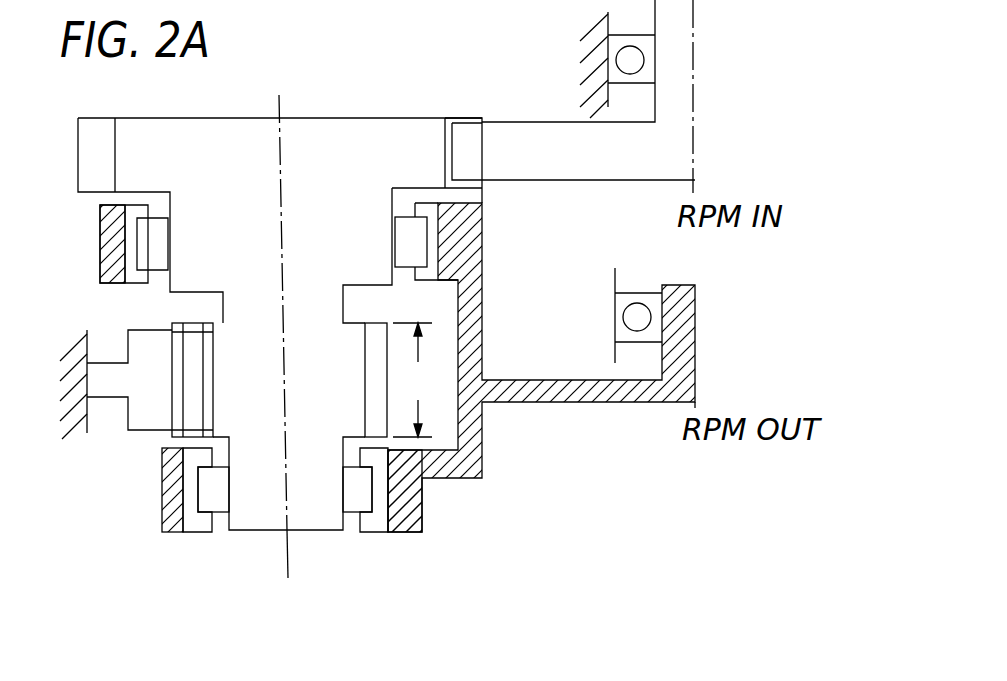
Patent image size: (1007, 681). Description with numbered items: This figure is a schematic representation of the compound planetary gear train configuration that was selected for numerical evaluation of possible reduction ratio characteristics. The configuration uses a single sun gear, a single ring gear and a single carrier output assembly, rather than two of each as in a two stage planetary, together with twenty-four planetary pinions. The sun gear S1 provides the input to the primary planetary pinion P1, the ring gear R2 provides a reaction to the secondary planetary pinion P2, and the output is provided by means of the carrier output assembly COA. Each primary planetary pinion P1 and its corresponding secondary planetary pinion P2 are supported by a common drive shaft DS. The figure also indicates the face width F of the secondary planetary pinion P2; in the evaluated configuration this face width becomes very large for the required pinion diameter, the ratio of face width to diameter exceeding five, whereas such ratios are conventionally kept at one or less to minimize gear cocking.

The drive shaft DS is at (248, 228).
The primary planetary pinion P1 is at (437, 153).
The sun gear S1 is at (570, 101).
The ring gear R2 is at (116, 384).
The secondary planetary pinion P2 is at (292, 427).
The face width F is at (412, 380).
The carrier output assembly COA is at (513, 403).